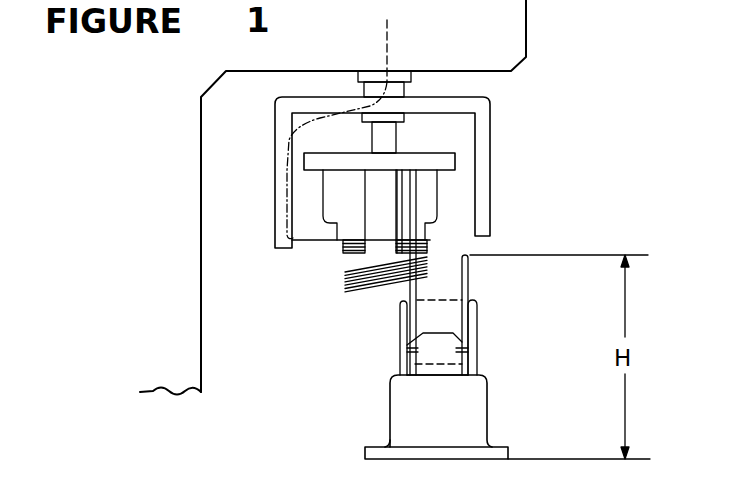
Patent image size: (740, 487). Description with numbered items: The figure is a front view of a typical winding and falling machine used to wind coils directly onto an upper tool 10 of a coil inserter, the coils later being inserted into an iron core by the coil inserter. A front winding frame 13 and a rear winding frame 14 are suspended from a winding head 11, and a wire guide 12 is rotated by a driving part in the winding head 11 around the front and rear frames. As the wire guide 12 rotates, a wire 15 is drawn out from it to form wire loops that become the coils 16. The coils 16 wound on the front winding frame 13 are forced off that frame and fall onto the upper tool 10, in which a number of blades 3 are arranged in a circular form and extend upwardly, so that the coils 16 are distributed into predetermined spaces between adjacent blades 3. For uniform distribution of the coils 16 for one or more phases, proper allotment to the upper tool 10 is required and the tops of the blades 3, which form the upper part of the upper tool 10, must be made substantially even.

The blades 3 is at (469, 270).
The upper tool 10 is at (542, 410).
The winding head 11 is at (526, 28).
The wire guide 12 is at (276, 212).
The front winding frame 13 is at (437, 190).
The rear winding frame 14 is at (323, 200).
The wire 15 is at (310, 245).
The coils 16 is at (362, 292).